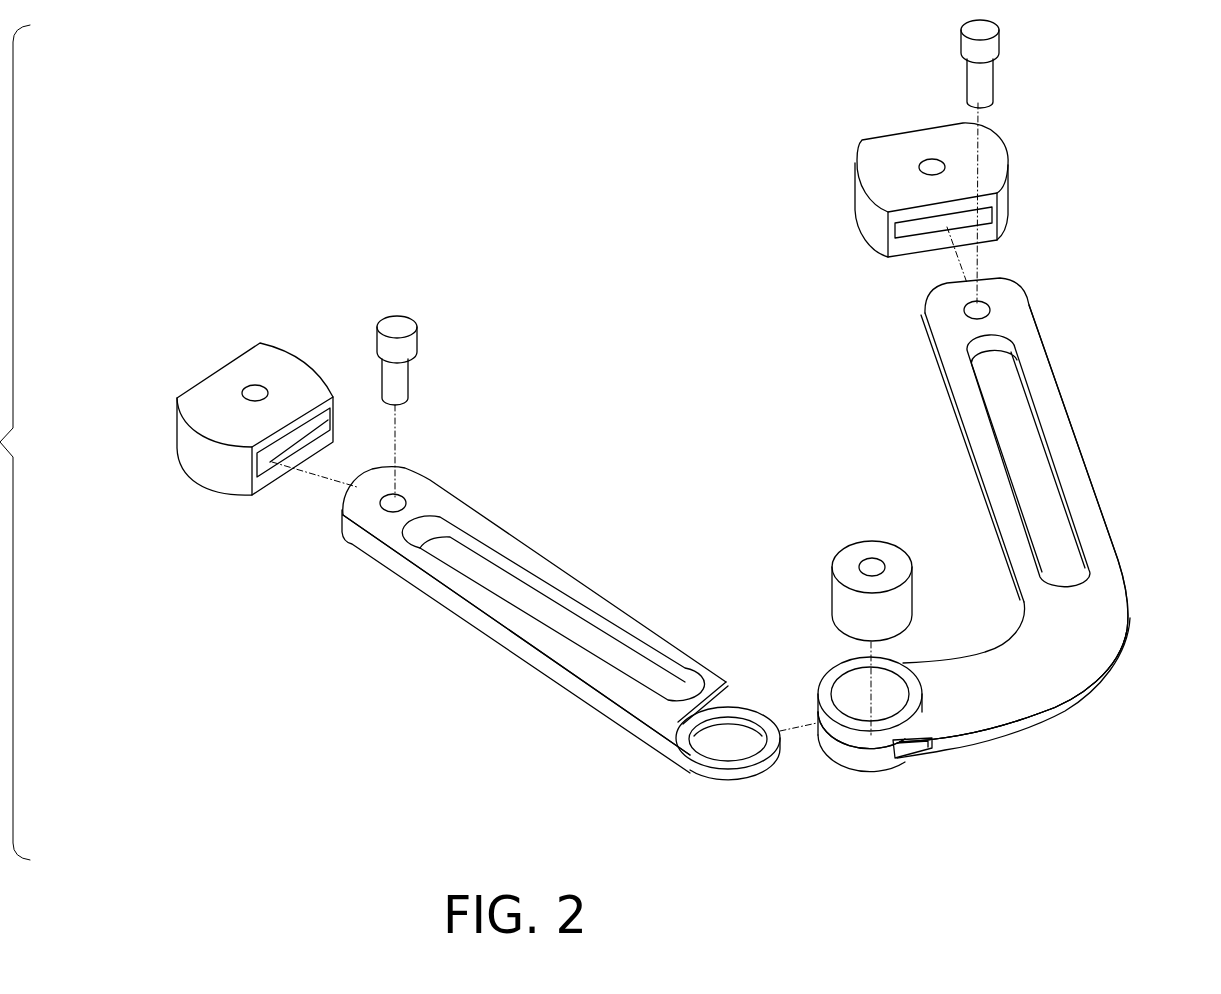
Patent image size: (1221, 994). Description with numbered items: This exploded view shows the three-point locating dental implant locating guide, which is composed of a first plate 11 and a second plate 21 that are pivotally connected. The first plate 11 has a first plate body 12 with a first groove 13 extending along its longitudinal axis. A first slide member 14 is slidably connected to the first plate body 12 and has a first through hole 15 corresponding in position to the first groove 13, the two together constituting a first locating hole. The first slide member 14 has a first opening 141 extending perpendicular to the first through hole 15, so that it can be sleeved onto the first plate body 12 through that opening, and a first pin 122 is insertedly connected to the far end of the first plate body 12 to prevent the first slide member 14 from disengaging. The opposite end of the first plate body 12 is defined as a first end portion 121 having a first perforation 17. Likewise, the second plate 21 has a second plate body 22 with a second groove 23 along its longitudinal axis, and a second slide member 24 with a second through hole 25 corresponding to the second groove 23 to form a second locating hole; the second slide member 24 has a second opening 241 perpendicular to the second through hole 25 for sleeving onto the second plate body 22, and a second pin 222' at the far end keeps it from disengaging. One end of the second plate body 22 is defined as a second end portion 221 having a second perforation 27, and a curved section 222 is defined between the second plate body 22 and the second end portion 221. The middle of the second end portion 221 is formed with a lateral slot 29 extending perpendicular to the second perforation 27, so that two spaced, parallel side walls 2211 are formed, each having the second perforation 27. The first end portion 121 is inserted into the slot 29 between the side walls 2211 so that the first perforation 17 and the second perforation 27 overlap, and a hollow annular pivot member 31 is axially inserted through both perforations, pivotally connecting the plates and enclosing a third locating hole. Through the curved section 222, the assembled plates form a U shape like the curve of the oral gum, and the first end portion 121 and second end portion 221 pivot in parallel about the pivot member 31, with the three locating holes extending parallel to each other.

The first plate 11 is at (478, 510).
The first plate body 12 is at (538, 563).
The first groove 13 is at (580, 627).
The first slide member 14 is at (298, 387).
The first through hole 15 is at (257, 386).
The first opening 141 is at (278, 462).
The first pin 122 is at (398, 330).
The first end portion 121 is at (730, 772).
The first perforation 17 is at (730, 730).
The second plate 21 is at (1022, 304).
The second plate body 22 is at (1097, 537).
The curved section 222 is at (1030, 688).
The second pin 222' is at (1067, 64).
The second groove 23 is at (1019, 405).
The second slide member 24 is at (883, 183).
The second through hole 25 is at (923, 157).
The second opening 241 is at (912, 235).
The second end portion 221 is at (832, 667).
The second perforation 27 is at (893, 667).
The side walls 2211 is at (842, 757).
The slot 29 is at (880, 753).
The pivot member 31 is at (913, 587).